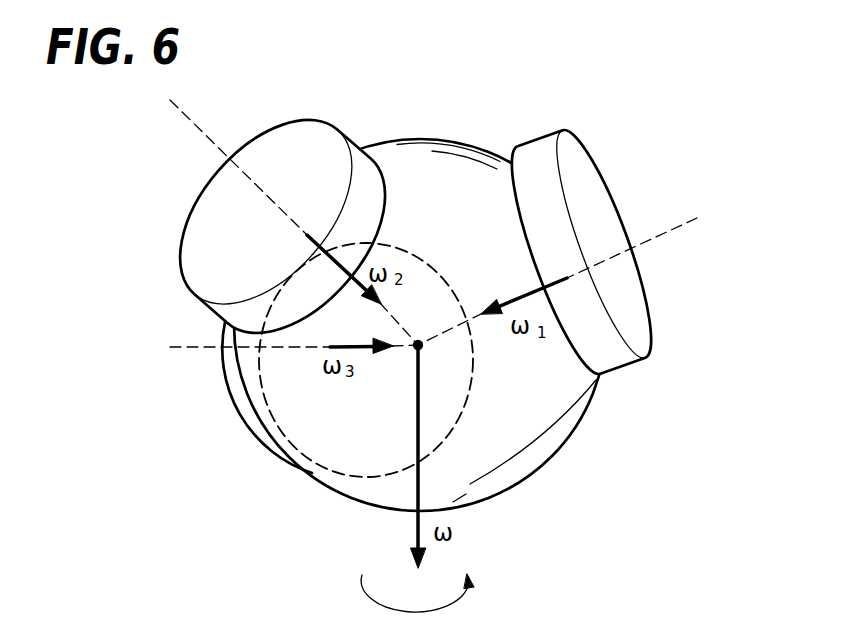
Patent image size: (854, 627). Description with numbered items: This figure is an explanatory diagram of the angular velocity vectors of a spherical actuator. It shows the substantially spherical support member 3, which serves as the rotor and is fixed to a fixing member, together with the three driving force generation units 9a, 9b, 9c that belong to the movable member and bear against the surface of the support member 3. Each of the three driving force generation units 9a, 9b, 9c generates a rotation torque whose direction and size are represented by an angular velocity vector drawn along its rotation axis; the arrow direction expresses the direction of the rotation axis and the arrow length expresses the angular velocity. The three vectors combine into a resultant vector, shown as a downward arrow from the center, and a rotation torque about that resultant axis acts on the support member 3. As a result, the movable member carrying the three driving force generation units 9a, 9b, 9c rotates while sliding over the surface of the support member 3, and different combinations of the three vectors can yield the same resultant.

The support member 3 is at (517, 470).
The driving force generation unit 9a is at (637, 318).
The driving force generation unit 9b is at (270, 148).
The driving force generation unit 9c is at (232, 388).